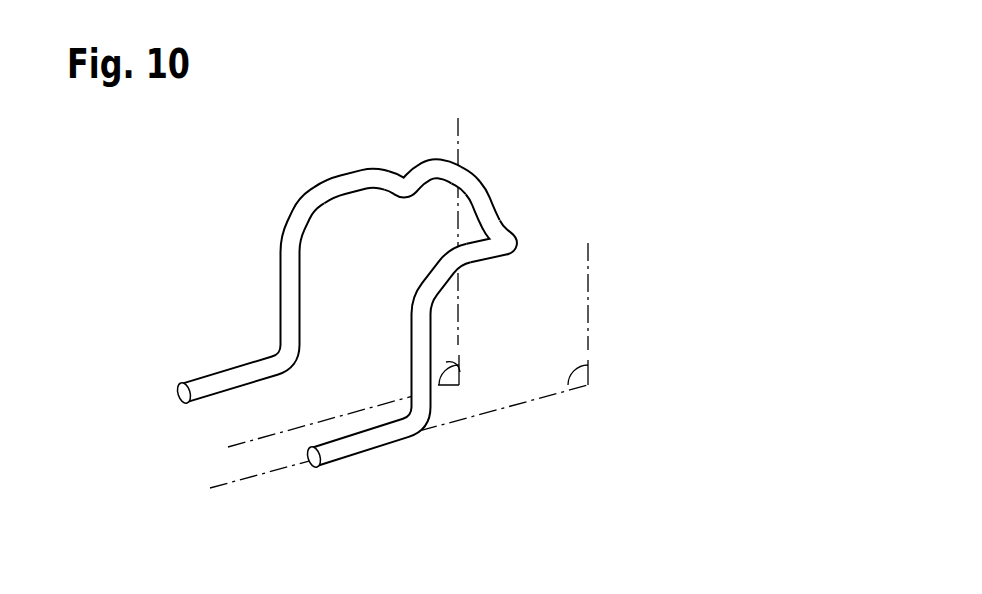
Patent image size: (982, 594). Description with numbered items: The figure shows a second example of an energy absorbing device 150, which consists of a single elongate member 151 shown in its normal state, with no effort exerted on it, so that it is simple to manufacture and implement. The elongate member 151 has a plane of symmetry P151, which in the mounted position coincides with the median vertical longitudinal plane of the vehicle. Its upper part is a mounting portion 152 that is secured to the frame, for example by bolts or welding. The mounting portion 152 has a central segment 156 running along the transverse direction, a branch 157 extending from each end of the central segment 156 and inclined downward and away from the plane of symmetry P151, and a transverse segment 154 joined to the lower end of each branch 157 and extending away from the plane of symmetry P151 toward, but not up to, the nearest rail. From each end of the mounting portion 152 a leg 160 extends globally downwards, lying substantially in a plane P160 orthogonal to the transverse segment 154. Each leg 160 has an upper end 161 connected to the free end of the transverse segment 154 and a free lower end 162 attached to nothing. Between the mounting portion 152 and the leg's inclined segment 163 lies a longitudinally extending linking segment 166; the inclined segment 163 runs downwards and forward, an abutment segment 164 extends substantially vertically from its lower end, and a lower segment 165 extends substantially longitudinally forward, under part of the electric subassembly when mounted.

The energy absorbing device 150 is at (156, 200).
The elongate member 151 is at (371, 307).
The mounting portion 152 is at (552, 190).
The transverse segment 154 is at (493, 228).
The central segment 156 is at (461, 176).
The branch 157 is at (479, 203).
The leg 160 is at (323, 388).
The upper end 161 is at (378, 178).
The free lower end 162 is at (180, 393).
The inclined segment 163 is at (298, 216).
The abutment segment 164 is at (285, 292).
The lower segment 165 is at (200, 386).
The linking segment 166 is at (345, 183).
The plane of symmetry P151 is at (446, 362).
The plane of the leg P160 is at (577, 366).